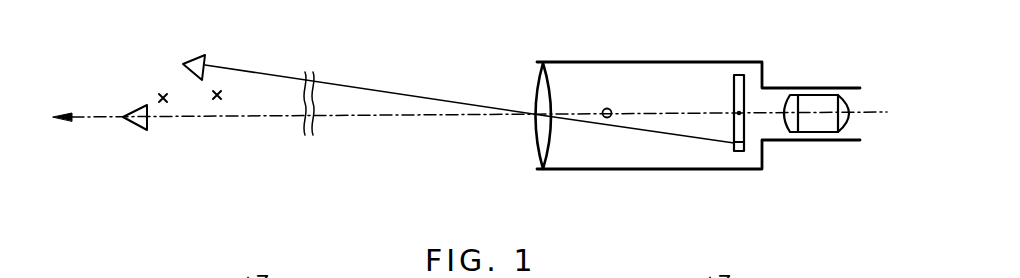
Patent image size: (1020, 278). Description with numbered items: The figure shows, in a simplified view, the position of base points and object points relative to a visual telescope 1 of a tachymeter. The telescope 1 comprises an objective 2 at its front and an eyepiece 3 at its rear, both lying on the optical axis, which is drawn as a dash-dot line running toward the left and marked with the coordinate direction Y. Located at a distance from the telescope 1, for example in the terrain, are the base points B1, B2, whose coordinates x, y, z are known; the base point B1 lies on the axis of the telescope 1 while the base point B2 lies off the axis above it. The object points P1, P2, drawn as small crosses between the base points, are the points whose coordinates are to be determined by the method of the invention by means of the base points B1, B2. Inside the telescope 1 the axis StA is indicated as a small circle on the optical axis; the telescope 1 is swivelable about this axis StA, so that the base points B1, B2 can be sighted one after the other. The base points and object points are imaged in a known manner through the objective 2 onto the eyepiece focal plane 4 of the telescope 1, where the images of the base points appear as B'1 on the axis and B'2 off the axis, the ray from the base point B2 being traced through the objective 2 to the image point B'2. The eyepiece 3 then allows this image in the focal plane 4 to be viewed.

The visual telescope 1 is at (615, 171).
The objective 2 is at (538, 130).
The eyepiece 3 is at (813, 125).
The eyepiece focal plane 4 is at (733, 82).
The axis StA is at (608, 108).
The base point B1 is at (137, 132).
The base point B2 is at (198, 52).
The object point P1 is at (159, 98).
The object point P2 is at (222, 94).
The image of base point B1 B'1 is at (769, 80).
The image of base point B2 B'2 is at (775, 182).
The y coordinate direction Y is at (470, 130).